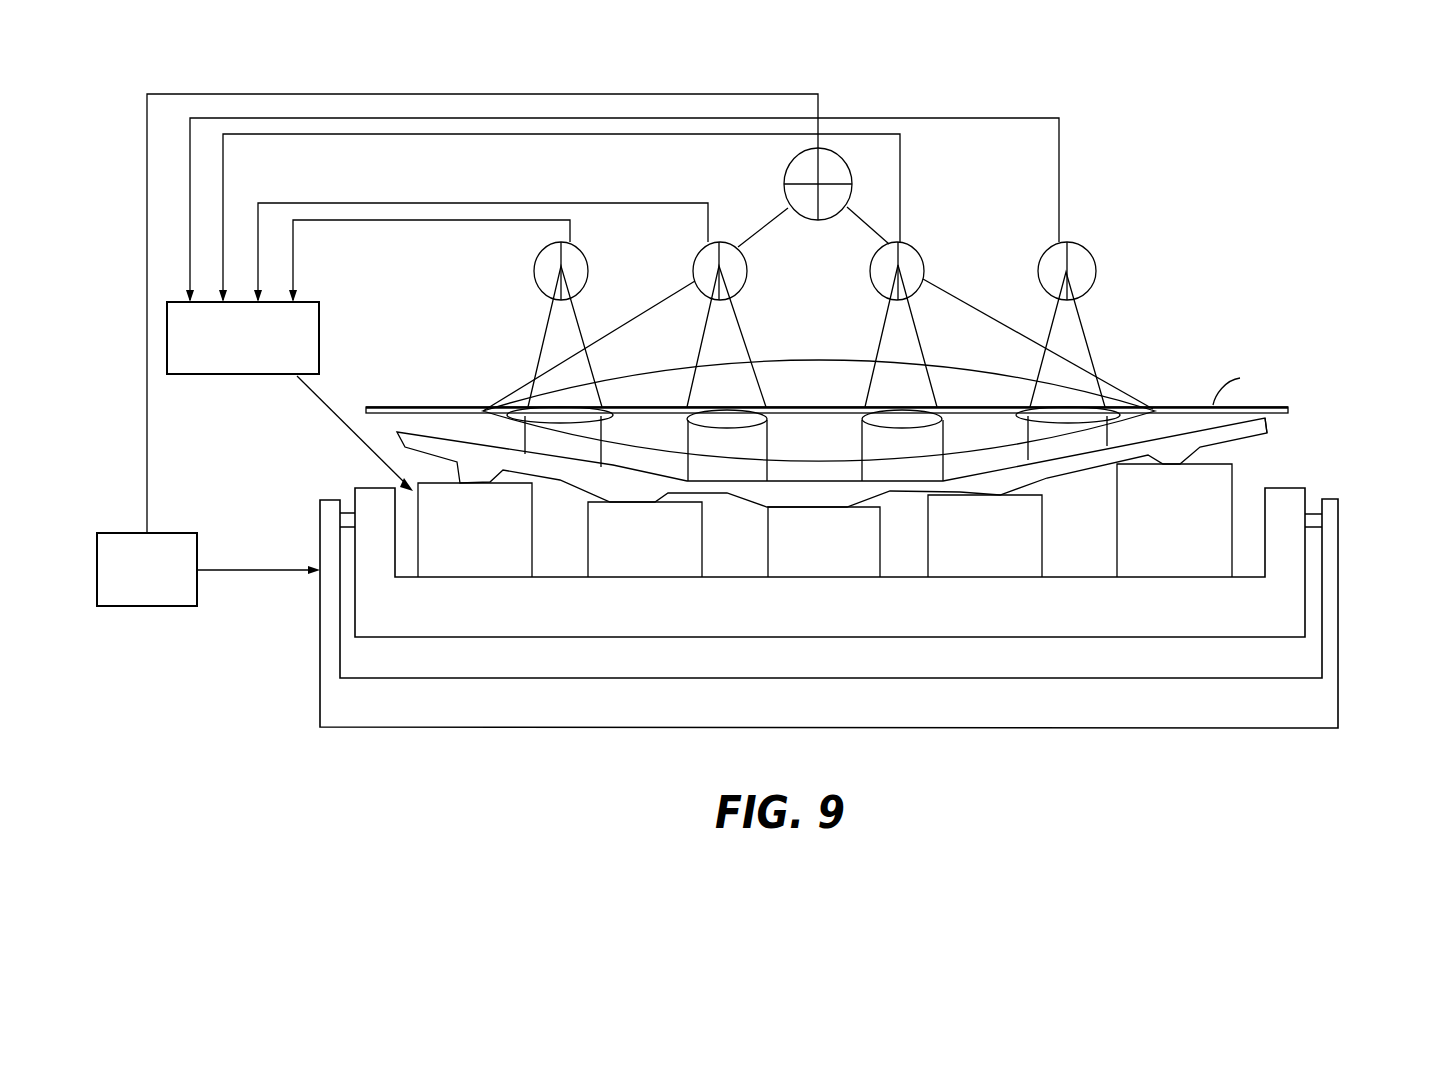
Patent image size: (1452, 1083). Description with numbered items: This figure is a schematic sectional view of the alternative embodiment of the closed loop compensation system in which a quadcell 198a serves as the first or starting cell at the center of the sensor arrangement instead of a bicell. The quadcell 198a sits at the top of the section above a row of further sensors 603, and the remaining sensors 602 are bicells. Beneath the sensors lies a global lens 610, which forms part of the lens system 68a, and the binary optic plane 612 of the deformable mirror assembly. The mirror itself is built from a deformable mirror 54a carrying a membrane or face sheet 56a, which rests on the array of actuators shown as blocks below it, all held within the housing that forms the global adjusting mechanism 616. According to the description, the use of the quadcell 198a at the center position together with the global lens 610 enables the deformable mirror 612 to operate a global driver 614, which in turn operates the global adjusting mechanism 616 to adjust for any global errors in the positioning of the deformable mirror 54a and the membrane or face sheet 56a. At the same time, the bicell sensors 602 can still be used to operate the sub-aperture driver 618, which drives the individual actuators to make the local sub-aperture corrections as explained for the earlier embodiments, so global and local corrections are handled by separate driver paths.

The quadcell 198a is at (785, 177).
The subaperture light sources 603 is at (693, 267).
The sub-aperture driver 618 is at (320, 318).
The deformable mirror 612 is at (1290, 343).
The global lens 610 is at (1118, 397).
The binary optic element 68a is at (908, 400).
The membrane or face sheet 56a is at (1192, 428).
The deformable mirror 54a is at (1298, 435).
The sensors 602 is at (822, 557).
The global driver 614 is at (140, 606).
The global adjusting mechanism 616 is at (360, 613).